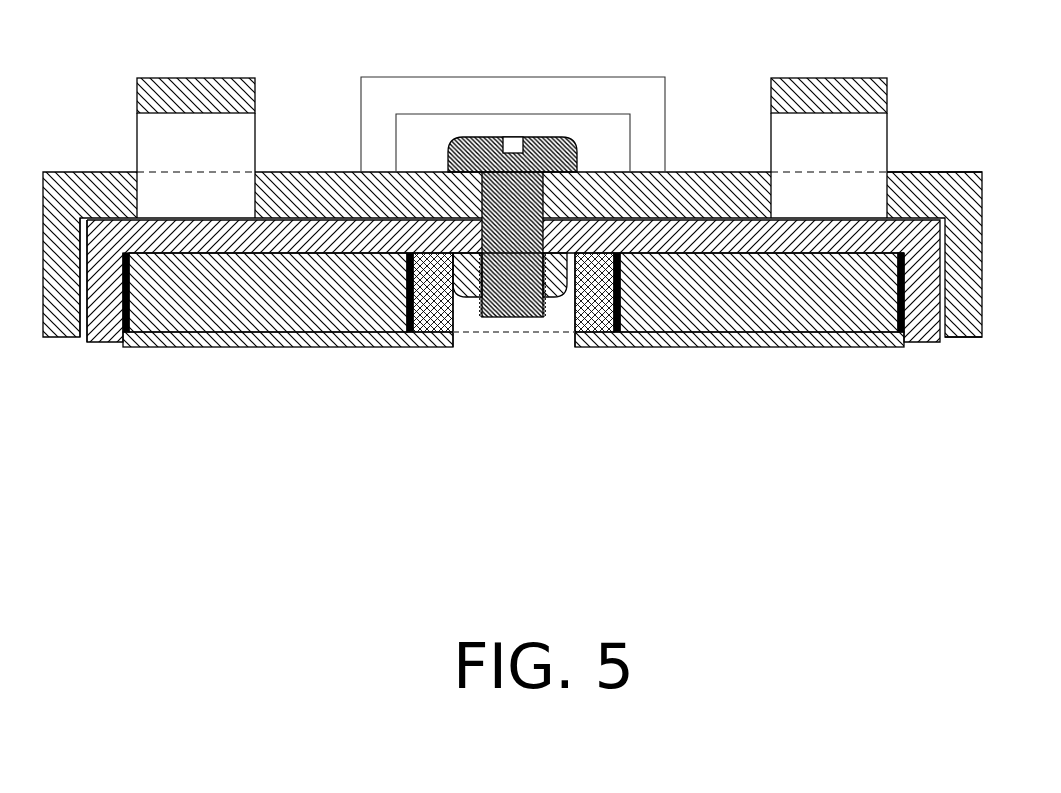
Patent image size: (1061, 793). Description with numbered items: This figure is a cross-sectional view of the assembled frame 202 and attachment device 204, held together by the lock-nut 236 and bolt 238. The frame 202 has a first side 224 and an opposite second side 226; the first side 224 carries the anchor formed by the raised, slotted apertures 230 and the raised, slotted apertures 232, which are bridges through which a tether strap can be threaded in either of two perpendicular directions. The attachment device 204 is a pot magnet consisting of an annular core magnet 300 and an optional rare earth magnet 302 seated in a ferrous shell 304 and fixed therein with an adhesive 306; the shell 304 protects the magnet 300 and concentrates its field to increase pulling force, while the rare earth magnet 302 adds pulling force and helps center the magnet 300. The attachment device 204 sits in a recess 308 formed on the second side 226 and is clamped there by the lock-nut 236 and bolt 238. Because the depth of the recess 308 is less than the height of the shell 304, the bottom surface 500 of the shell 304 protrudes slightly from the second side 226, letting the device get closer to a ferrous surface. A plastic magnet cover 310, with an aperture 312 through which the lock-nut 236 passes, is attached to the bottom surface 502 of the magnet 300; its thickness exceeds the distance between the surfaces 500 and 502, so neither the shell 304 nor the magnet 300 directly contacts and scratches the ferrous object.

The frame 202 is at (963, 277).
The attachment device 204 is at (512, 337).
The first side 224 is at (945, 171).
The second side 226 is at (962, 338).
The first set of raised, slotted apertures 230 is at (441, 126).
The second set of raised, slotted apertures 232 is at (153, 146).
The lock-nut 236 is at (548, 300).
The bolt 238 is at (565, 136).
The annular core magnet 300 is at (270, 328).
The rare earth magnet 302 is at (108, 333).
The ferrous shell 304 is at (128, 305).
The adhesive 306 is at (420, 331).
The recess 308 is at (83, 334).
The magnet cover 310 is at (658, 338).
The aperture 312 is at (514, 340).
The bottom surface of shell 500 is at (908, 346).
The bottom surface of magnet 502 is at (763, 333).